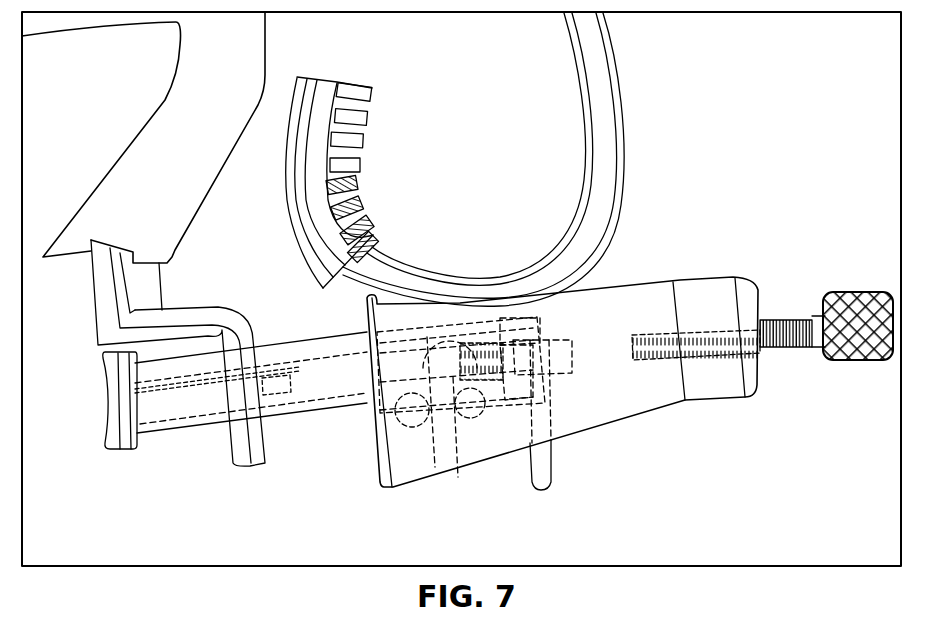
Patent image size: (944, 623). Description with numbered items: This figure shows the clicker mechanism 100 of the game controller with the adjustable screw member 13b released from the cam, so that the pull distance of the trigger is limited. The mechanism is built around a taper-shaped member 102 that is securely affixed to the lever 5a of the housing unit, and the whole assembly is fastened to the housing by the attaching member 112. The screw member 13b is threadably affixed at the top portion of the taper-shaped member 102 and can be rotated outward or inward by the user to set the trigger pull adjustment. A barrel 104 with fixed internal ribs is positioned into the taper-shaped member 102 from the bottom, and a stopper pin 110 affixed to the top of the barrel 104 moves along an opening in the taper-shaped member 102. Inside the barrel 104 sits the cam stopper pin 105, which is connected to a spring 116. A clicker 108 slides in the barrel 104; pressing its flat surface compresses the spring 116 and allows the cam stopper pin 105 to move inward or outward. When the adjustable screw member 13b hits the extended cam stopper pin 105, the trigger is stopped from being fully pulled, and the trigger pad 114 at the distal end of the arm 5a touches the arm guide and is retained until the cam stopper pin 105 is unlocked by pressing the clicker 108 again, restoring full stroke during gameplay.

The lever 5a is at (593, 62).
The clicker mechanism 100 is at (471, 348).
The screw member 13b is at (862, 293).
The trigger pad 114 is at (353, 180).
The attaching member 112 is at (197, 322).
The clicker 108 is at (147, 412).
The barrel 104 is at (332, 400).
The spring 116 is at (498, 368).
The cam stopper pin 105 is at (568, 372).
The taper-shaped member 102 is at (700, 395).
The stopper pin 110 is at (544, 492).